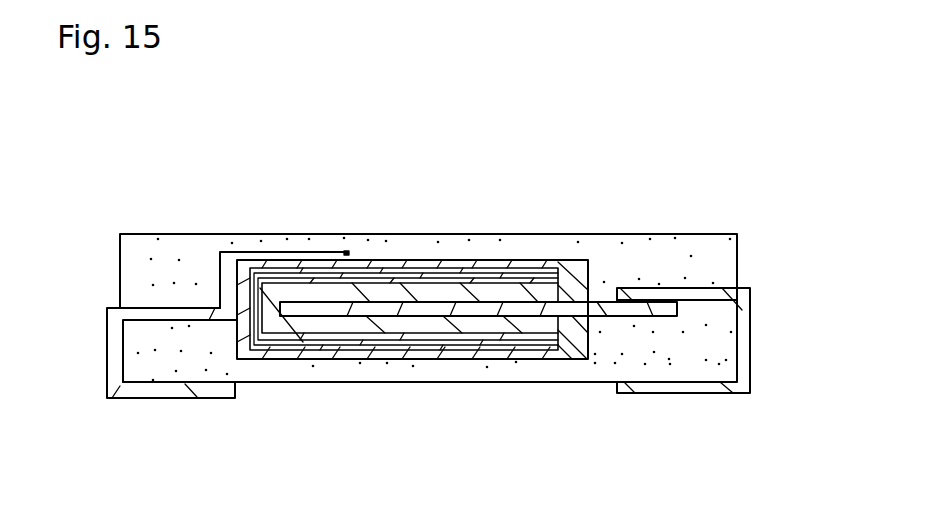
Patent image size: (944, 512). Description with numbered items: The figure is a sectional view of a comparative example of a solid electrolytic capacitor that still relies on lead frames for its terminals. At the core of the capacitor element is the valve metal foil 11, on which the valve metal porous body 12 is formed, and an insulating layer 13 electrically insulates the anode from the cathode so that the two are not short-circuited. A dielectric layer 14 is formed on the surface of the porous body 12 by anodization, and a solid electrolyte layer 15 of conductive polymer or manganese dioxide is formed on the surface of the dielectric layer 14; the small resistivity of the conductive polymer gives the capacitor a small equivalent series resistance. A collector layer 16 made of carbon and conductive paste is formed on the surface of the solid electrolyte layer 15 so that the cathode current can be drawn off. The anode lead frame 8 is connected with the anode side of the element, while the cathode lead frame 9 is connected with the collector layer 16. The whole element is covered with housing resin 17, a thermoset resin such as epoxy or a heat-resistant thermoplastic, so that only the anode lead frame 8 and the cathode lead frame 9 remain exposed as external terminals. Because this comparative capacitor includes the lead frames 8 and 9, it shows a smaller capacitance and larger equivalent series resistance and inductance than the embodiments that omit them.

The anode lead frame 8 is at (683, 387).
The cathode lead frame 9 is at (175, 388).
The valve metal foil 11 is at (346, 318).
The valve metal porous body 12 is at (424, 290).
The insulating layer 13 is at (573, 345).
The dielectric layer 14 is at (468, 280).
The solid electrolyte layer 15 is at (509, 276).
The collector layer 16 is at (549, 272).
The housing resin 17 is at (290, 385).